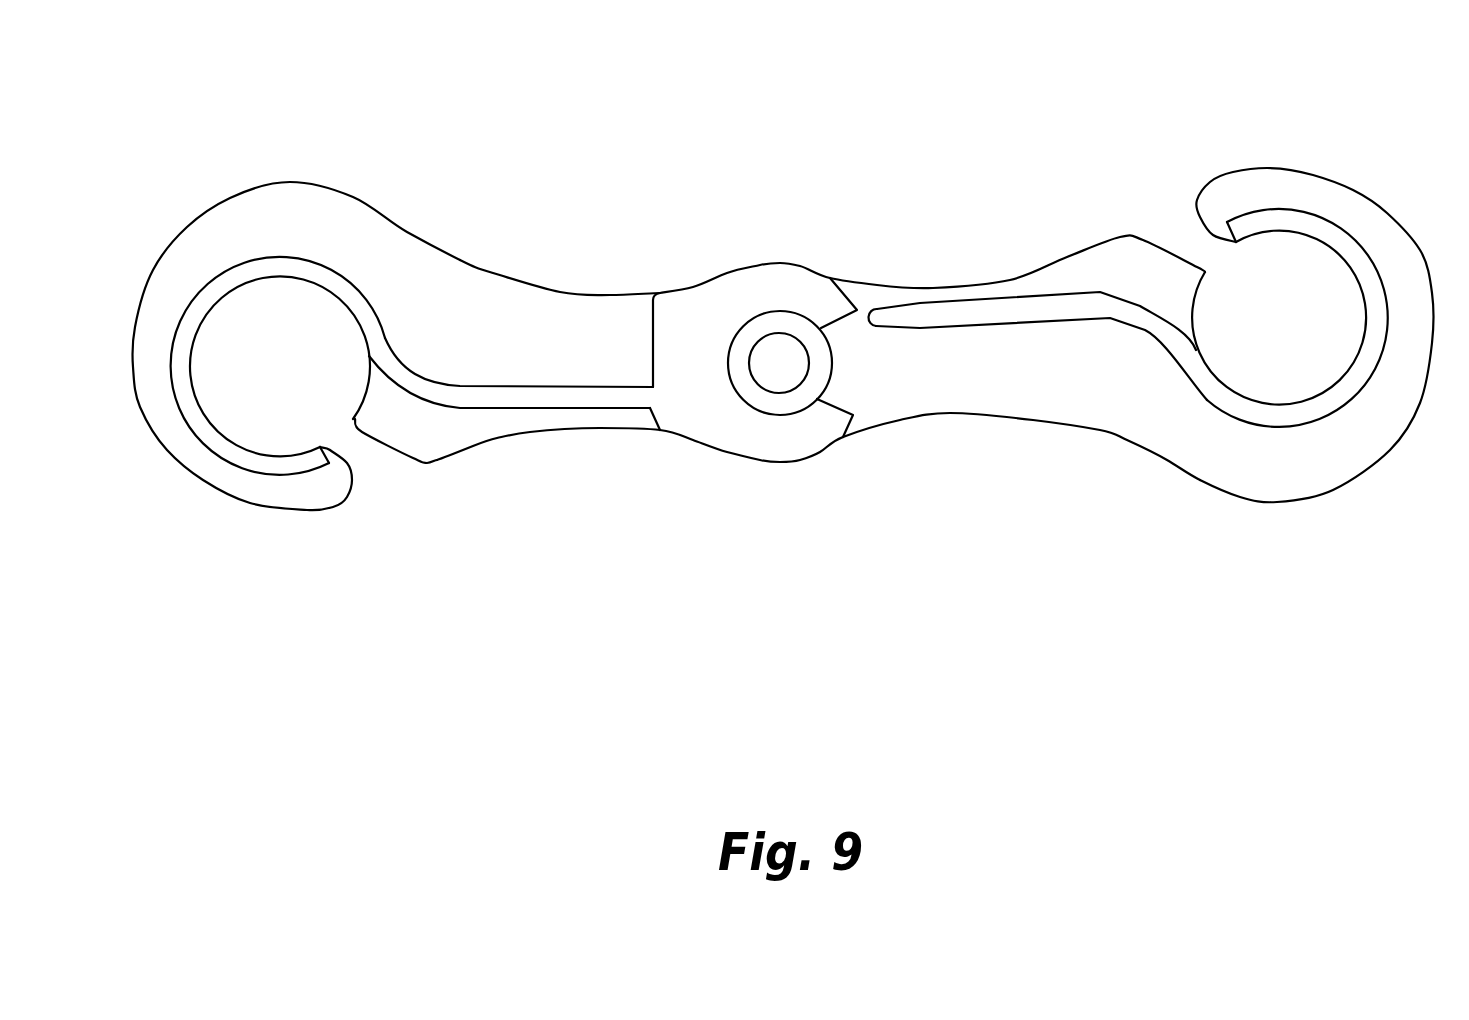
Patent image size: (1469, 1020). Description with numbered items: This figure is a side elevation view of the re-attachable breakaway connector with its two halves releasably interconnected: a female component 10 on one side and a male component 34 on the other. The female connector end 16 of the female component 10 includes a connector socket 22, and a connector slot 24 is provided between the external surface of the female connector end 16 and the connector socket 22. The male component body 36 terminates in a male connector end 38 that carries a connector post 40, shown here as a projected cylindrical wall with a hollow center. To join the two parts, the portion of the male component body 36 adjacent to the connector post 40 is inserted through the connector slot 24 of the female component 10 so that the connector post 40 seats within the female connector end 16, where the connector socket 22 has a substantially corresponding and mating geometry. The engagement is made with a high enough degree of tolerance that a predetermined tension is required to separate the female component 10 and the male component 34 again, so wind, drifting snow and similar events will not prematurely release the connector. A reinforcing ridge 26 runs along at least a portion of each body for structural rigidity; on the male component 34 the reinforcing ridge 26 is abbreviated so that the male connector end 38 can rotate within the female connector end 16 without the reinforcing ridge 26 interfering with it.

The female component 10 is at (507, 207).
The female connector end 16 is at (767, 484).
The connector socket 22 is at (792, 311).
The connector slot 24 is at (867, 393).
The reinforcing ridge 26 is at (480, 409).
The male component 34 is at (1024, 262).
The male component body 36 is at (950, 387).
The male connector end 38 is at (855, 250).
The connector post 40 is at (847, 340).